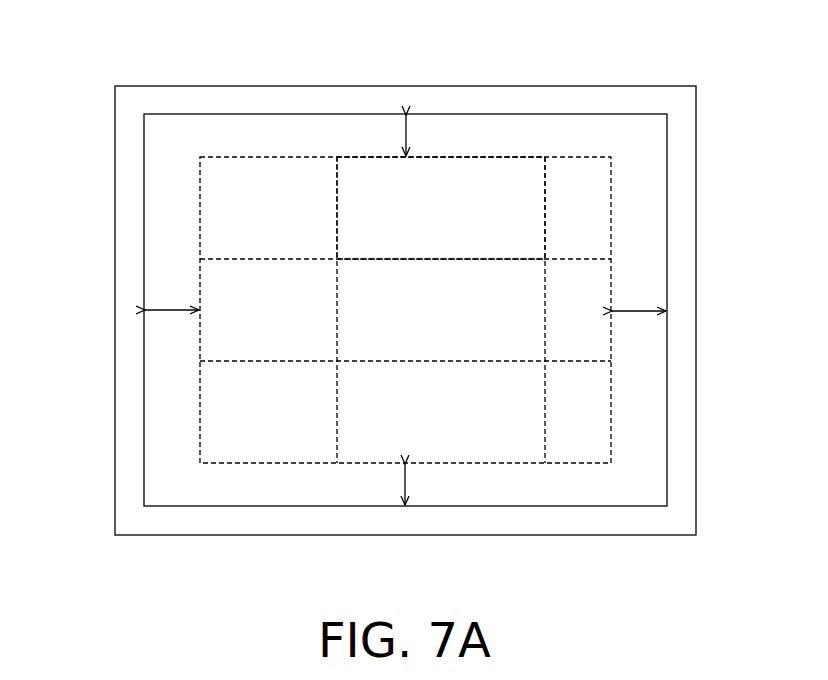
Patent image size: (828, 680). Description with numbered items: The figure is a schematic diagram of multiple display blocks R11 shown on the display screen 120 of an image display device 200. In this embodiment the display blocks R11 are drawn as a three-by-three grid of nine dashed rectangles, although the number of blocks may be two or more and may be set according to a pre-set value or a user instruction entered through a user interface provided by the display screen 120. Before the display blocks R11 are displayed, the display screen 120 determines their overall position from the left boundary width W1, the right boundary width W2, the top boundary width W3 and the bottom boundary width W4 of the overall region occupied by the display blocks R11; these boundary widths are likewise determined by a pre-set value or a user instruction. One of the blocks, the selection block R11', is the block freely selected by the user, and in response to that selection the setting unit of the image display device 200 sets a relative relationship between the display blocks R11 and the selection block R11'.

The image display device 200 is at (218, 58).
The display screen 120 is at (144, 183).
The display blocks R11 is at (459, 255).
The selection block R11' is at (439, 145).
The left boundary width W1 is at (172, 294).
The right boundary width W2 is at (639, 294).
The top boundary width W3 is at (427, 135).
The bottom boundary width W4 is at (427, 484).